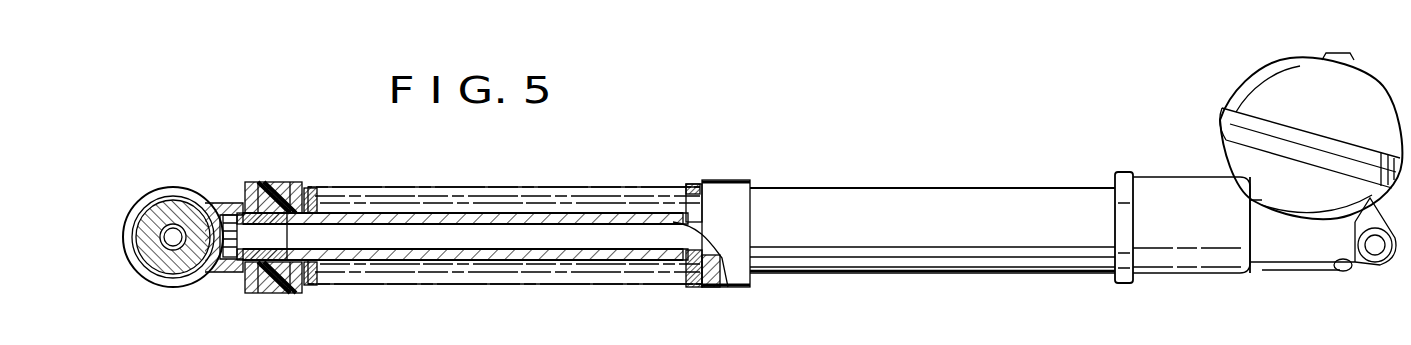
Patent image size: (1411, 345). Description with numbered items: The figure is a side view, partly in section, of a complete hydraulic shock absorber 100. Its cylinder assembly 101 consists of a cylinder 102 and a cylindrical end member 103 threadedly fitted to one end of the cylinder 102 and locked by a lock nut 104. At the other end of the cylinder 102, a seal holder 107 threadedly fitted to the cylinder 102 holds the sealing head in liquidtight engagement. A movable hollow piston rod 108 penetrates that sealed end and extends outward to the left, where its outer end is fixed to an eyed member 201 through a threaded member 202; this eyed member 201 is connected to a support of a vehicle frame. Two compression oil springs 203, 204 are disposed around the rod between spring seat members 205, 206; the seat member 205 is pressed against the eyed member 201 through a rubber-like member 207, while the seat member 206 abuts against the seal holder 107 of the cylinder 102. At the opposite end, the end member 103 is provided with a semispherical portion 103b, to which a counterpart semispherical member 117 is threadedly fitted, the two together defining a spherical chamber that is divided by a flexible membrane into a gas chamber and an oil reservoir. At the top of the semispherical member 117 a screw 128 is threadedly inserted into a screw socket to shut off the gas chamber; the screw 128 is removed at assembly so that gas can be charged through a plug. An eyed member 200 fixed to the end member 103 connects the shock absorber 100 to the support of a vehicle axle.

The hydraulic shock absorber 100 is at (692, 183).
The cylinder assembly 101 is at (962, 186).
The cylinder 102 is at (943, 264).
The cylindrical end member 103 is at (1197, 268).
The semispherical portion 103b is at (1247, 162).
The lock nut 104 is at (1124, 178).
The seal holder 107 is at (722, 287).
The hollow piston rod 108 is at (532, 262).
The semispherical member 117 is at (1256, 92).
The screw 128 is at (1274, 336).
The eyed member 200 is at (1375, 266).
The eyed member 201 is at (212, 168).
The threaded member 202 is at (244, 273).
The compression oil spring 203 is at (305, 185).
The compression oil spring 204 is at (312, 200).
The spring seat member 205 is at (306, 286).
The spring seat member 206 is at (698, 284).
The rubber-like member 207 is at (268, 292).